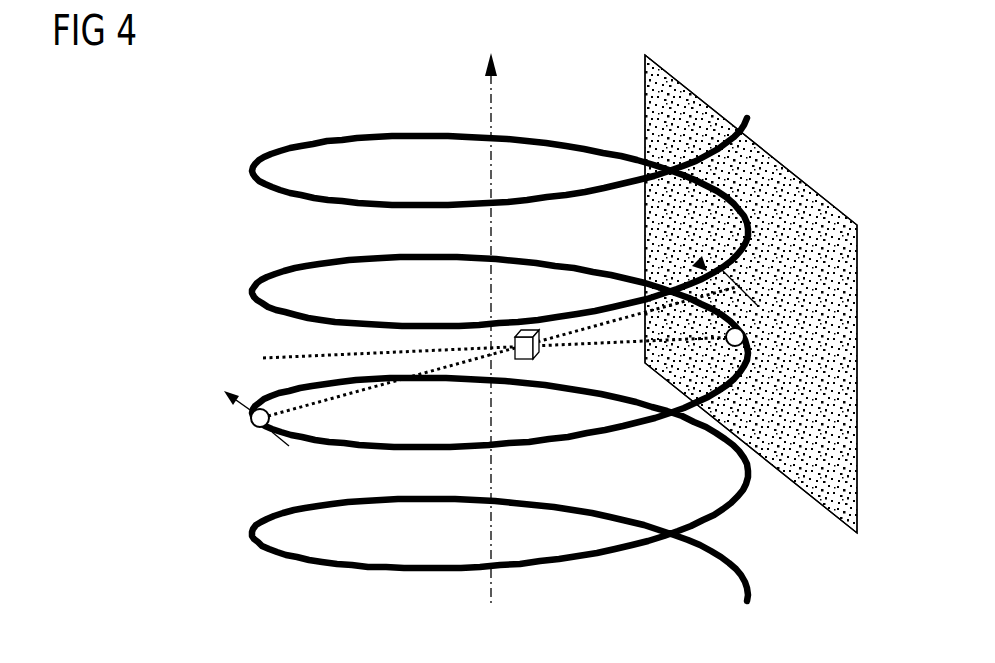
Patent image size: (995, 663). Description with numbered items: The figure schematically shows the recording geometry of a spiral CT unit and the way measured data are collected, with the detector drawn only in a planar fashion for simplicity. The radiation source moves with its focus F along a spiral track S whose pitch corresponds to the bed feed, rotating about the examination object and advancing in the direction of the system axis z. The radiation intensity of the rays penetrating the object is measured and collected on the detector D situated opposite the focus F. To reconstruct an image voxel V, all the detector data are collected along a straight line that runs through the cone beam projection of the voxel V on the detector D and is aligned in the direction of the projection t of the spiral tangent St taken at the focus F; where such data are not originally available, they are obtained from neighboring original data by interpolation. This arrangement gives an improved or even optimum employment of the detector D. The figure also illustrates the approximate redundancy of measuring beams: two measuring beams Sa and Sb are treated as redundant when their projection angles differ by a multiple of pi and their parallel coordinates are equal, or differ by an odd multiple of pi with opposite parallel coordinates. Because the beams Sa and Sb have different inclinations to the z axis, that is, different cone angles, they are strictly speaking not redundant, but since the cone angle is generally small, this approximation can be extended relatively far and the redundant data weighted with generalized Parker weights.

The spiral track S is at (337, 140).
The detector D is at (770, 153).
The z-axis z is at (493, 88).
The measuring beam Sb is at (295, 357).
The measuring beam Sa is at (353, 398).
The voxel V is at (536, 357).
The focus F is at (256, 428).
The spiral tangent St is at (247, 410).
The projection of the spiral tangent t is at (730, 280).